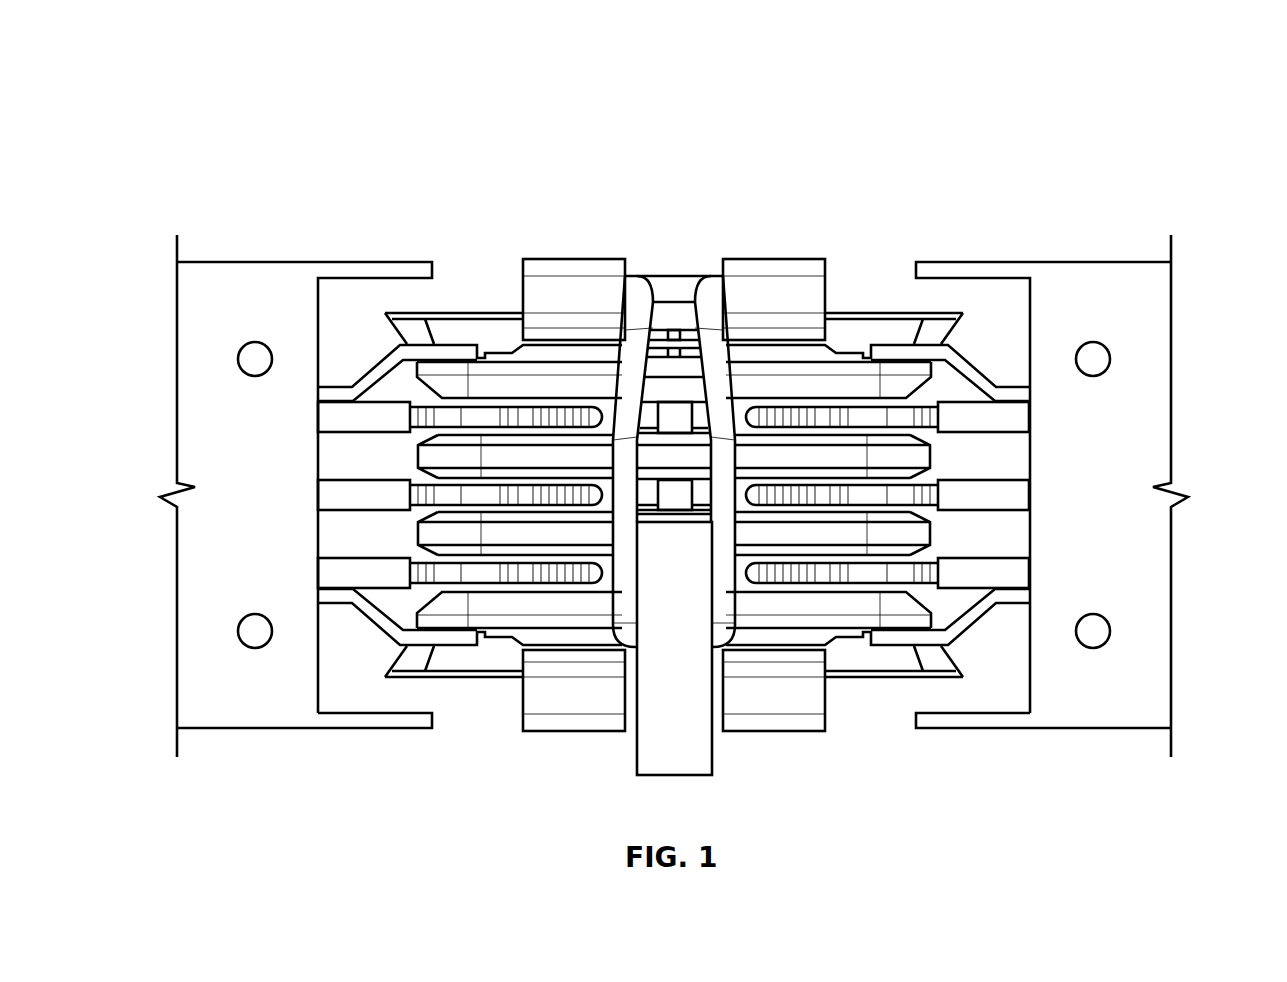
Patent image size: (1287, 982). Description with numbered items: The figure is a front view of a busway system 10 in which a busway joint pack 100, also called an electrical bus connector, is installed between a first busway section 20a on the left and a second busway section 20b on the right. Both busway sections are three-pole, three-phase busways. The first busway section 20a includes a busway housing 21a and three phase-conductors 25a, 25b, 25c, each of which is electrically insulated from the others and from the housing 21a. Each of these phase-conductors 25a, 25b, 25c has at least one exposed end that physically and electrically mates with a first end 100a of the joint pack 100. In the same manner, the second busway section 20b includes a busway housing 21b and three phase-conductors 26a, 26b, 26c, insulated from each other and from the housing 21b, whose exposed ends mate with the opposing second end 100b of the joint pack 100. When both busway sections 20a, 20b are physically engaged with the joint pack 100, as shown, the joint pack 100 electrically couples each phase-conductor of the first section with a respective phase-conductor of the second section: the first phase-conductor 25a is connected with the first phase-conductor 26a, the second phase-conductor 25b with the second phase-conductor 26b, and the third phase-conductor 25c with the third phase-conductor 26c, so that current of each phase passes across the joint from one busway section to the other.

The busway system 10 is at (1160, 94).
The busway joint pack 100 is at (697, 143).
The first end of the joint pack 100a is at (407, 276).
The second end of the joint pack 100b is at (942, 276).
The first busway section 20a is at (221, 232).
The second busway section 20b is at (1127, 232).
The busway housing 21a is at (227, 716).
The busway housing 21b is at (1121, 716).
The first phase-conductor 25a is at (430, 417).
The second phase-conductor 25b is at (430, 495).
The third phase-conductor 25c is at (430, 573).
The first phase-conductor 26a is at (918, 417).
The second phase-conductor 26b is at (918, 495).
The third phase-conductor 26c is at (918, 573).